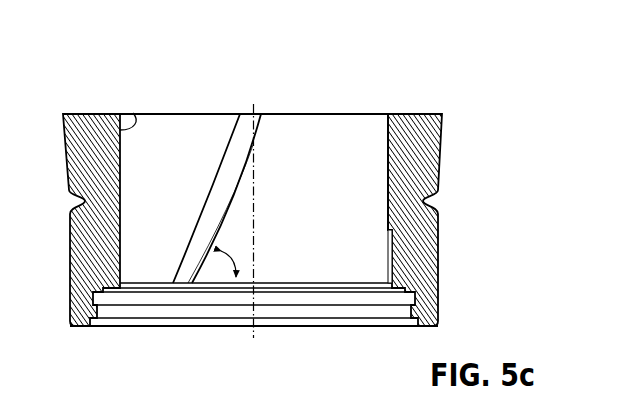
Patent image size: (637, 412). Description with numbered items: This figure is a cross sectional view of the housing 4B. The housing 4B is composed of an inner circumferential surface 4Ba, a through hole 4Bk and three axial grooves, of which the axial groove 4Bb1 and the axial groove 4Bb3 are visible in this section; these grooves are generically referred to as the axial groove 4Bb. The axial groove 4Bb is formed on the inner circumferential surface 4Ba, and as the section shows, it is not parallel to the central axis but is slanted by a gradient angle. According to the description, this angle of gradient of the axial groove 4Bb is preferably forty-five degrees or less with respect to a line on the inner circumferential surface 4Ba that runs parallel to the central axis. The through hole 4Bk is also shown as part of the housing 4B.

The housing 4B is at (414, 124).
The inner circumferential surface 4Ba is at (133, 112).
The axial groove 4Bb is at (253, 160).
The axial groove 4Bb3 is at (222, 180).
The axial groove 4Bb1 is at (390, 257).
The through hole 4Bk is at (353, 133).